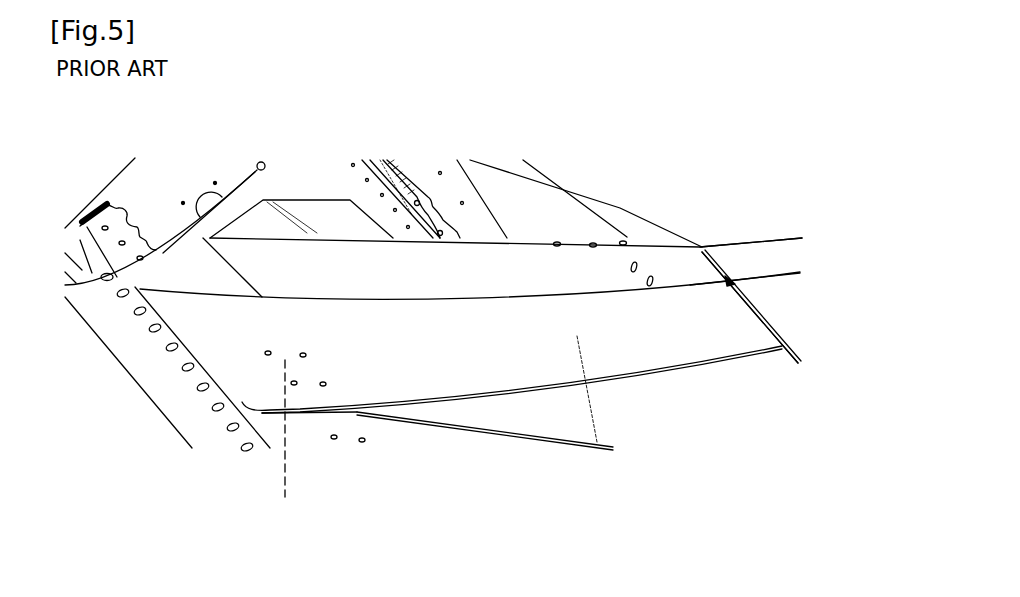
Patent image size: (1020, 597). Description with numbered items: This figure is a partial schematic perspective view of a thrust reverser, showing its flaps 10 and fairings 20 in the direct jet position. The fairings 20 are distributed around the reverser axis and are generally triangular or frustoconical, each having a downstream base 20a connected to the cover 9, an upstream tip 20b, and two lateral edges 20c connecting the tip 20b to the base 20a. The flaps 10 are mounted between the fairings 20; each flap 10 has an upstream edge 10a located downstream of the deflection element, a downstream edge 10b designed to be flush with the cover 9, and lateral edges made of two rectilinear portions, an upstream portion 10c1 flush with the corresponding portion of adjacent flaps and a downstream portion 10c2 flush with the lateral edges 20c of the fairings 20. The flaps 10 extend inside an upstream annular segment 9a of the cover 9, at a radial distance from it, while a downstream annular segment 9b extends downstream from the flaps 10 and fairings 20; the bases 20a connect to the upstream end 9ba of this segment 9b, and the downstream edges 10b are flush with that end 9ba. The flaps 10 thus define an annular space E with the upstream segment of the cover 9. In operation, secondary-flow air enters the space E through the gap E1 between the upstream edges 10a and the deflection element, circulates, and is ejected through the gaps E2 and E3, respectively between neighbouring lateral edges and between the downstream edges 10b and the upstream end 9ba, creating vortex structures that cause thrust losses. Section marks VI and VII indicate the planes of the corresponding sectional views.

The cover 9 is at (170, 268).
The upstream annular segment 9a is at (543, 252).
The downstream annular segment 9b is at (787, 263).
The upstream end 9ba is at (770, 320).
The flap 10 is at (390, 315).
The upstream edge 10a is at (203, 378).
The downstream edge 10b is at (748, 300).
The upstream portion 10c1 is at (297, 417).
The downstream portion 10c2 is at (485, 393).
The fairing 20 is at (702, 455).
The downstream base 20a is at (800, 360).
The upstream tip 20b is at (360, 415).
The lateral edge 20c is at (530, 395).
The annular space E is at (505, 276).
The gap E1 is at (188, 354).
The gap E2 is at (427, 417).
The gap E3 is at (772, 338).
The section line VI is at (577, 350).
The section line VII is at (283, 372).